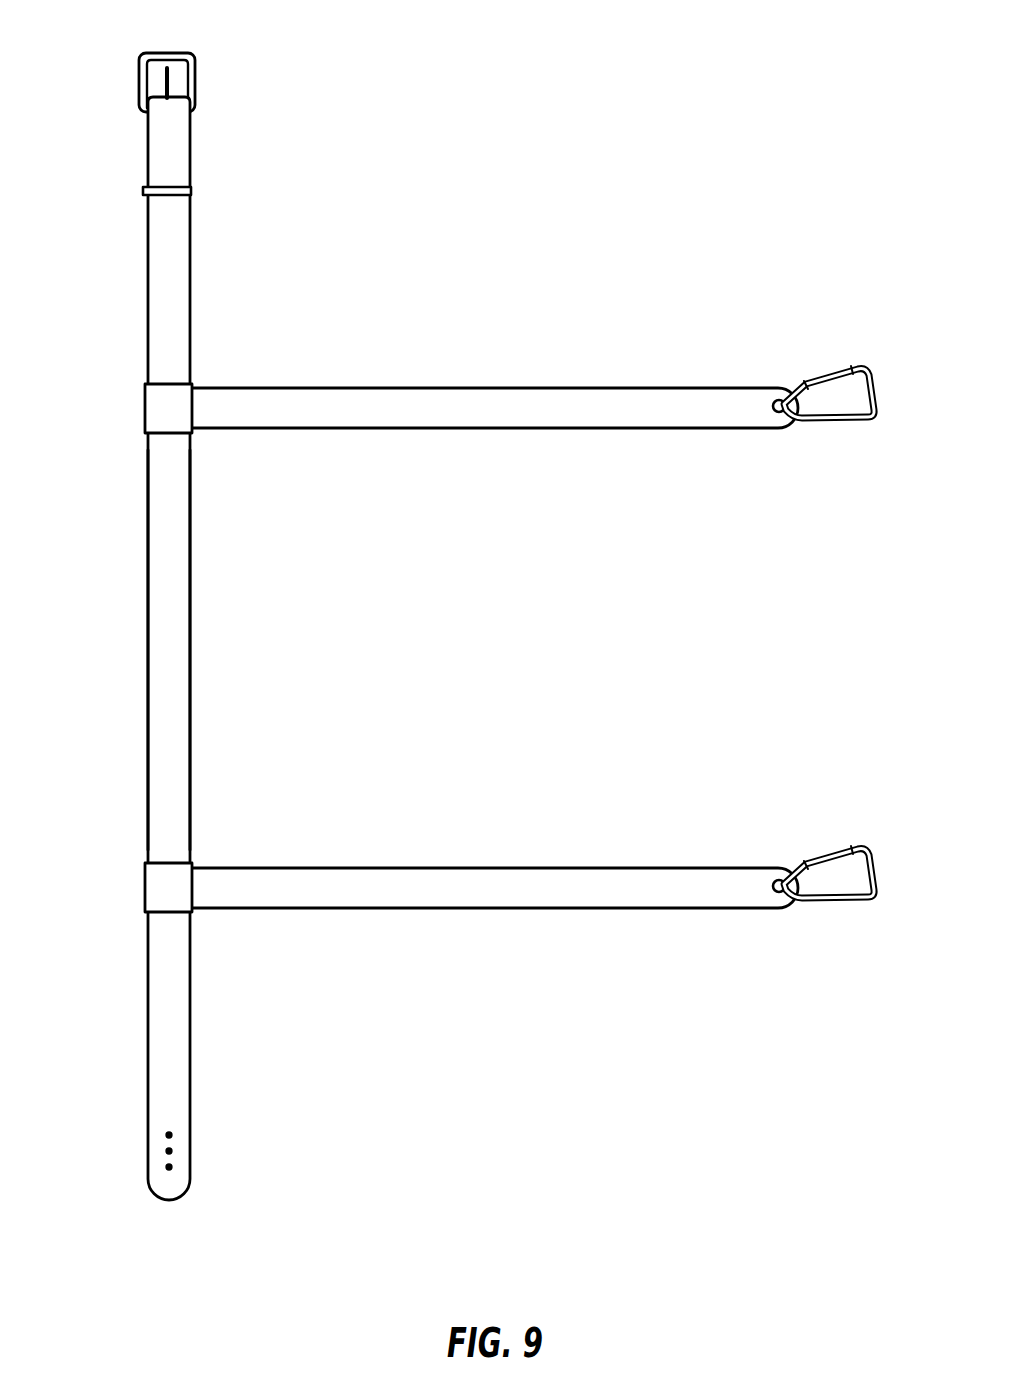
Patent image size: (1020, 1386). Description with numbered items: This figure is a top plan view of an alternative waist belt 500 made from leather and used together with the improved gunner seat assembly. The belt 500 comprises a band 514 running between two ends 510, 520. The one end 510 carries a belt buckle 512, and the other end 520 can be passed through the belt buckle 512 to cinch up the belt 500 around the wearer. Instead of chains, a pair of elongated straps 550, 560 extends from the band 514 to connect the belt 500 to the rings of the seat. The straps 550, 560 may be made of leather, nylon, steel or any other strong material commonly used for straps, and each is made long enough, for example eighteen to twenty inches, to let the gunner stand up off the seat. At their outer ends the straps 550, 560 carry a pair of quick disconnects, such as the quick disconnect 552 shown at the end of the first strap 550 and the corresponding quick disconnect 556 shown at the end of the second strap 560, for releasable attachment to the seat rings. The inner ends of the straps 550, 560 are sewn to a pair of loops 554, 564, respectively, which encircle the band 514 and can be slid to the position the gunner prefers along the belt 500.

The waist belt 500 is at (527, 158).
The end 510 is at (177, 147).
The belt buckle 512 is at (168, 53).
The band 514 is at (180, 608).
The end 520 is at (180, 1148).
The elongated strap 550 is at (480, 387).
The quick disconnect 552 is at (853, 370).
The loop 554 is at (150, 412).
The lower clip 556 is at (853, 850).
The elongated strap 560 is at (480, 867).
The loop 564 is at (150, 892).